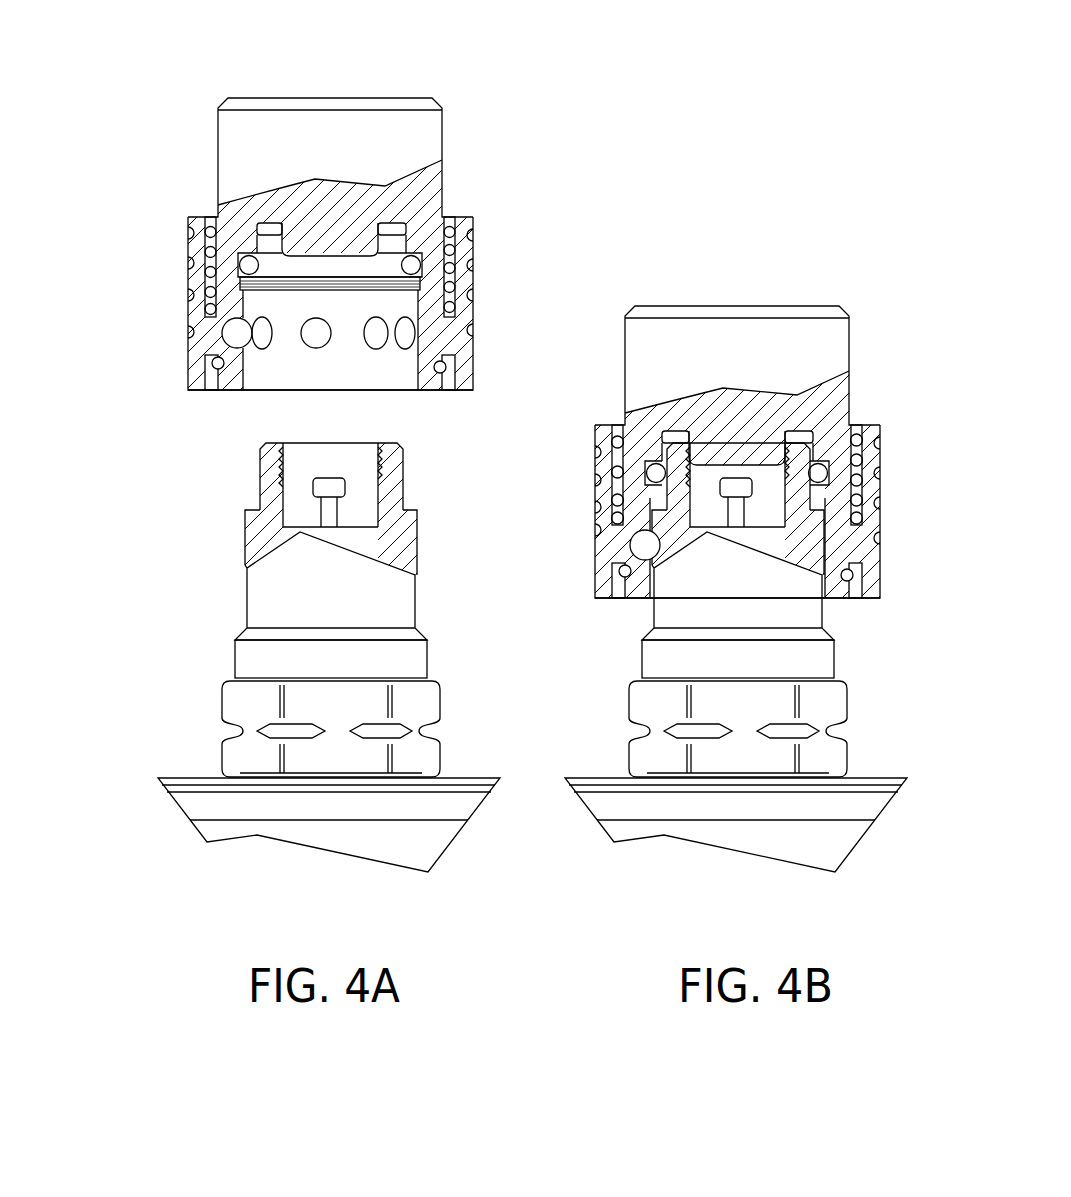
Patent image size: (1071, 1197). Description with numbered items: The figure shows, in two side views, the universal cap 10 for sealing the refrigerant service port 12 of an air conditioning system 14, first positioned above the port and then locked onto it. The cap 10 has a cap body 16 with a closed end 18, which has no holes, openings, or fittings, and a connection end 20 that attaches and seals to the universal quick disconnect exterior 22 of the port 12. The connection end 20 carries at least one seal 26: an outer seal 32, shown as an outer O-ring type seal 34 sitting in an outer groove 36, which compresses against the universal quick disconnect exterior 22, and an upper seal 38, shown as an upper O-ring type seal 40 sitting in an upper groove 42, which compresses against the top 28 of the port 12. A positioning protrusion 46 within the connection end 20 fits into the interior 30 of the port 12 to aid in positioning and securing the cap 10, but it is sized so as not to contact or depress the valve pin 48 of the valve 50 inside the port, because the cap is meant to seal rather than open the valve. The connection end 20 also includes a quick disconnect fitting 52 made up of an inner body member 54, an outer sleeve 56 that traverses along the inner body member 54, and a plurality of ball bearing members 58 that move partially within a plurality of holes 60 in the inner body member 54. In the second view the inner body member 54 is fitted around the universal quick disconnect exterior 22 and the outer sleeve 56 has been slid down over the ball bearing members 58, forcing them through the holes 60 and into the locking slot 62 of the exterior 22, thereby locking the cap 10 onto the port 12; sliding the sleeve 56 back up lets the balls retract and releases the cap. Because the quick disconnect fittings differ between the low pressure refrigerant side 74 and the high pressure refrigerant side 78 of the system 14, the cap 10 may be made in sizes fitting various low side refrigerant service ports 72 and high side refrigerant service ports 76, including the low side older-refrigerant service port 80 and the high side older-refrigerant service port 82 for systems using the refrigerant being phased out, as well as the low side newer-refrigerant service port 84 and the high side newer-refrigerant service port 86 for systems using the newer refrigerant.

In FIG. 4A, the universal cap 10 is at (447, 63).
In FIG. 4B, the universal cap 10 is at (876, 268).
In FIG. 4A, the refrigerant service port 12 is at (256, 703).
In FIG. 4B, the refrigerant service port 12 is at (664, 703).
In FIG. 4A, the air conditioning system 14 is at (294, 846).
In FIG. 4B, the air conditioning system 14 is at (743, 831).
In FIG. 4A, the cap body 16 is at (143, 190).
In FIG. 4B, the cap body 16 is at (580, 413).
In FIG. 4A, the closed end 18 is at (305, 65).
In FIG. 4B, the closed end 18 is at (713, 280).
In FIG. 4A, the connection end 20 is at (262, 397).
In FIG. 4B, the connection end 20 is at (630, 615).
In FIG. 4A, the universal quick disconnect exterior 22 is at (185, 540).
In FIG. 4B, the universal quick disconnect exterior 22 is at (840, 592).
In FIG. 4A, the seal 26 is at (155, 318).
In FIG. 4B, the seal 26 is at (582, 515).
In FIG. 4A, the top 28 is at (398, 446).
In FIG. 4B, the top 28 is at (856, 446).
In FIG. 4A, the interior 30 is at (302, 447).
In FIG. 4B, the interior 30 is at (708, 522).
In FIG. 4A, the outer seal 32 is at (210, 220).
In FIG. 4B, the outer seal 32 is at (624, 445).
In FIG. 4A, the outer O-ring type seal 34 is at (432, 262).
In FIG. 4B, the outer O-ring type seal 34 is at (657, 480).
In FIG. 4A, the outer groove 36 is at (250, 265).
In FIG. 4B, the outer groove 36 is at (826, 475).
In FIG. 4A, the upper seal 38 is at (252, 188).
In FIG. 4B, the upper seal 38 is at (682, 410).
In FIG. 4A, the upper O-ring type seal 40 is at (244, 230).
In FIG. 4B, the upper O-ring type seal 40 is at (646, 452).
In FIG. 4A, the upper groove 42 is at (284, 222).
In FIG. 4B, the upper groove 42 is at (665, 440).
In FIG. 4A, the positioning protrusion 46 is at (334, 228).
In FIG. 4B, the positioning protrusion 46 is at (735, 440).
In FIG. 4A, the valve pin 48 is at (320, 488).
In FIG. 4B, the valve pin 48 is at (748, 488).
In FIG. 4A, the valve 50 is at (300, 522).
In FIG. 4B, the valve 50 is at (776, 517).
In FIG. 4A, the quick disconnect fitting 52 is at (170, 343).
In FIG. 4B, the quick disconnect fitting 52 is at (908, 437).
In FIG. 4A, the inner body member 54 is at (228, 375).
In FIG. 4B, the inner body member 54 is at (606, 600).
In FIG. 4A, the outer sleeve 56 is at (455, 340).
In FIG. 4B, the outer sleeve 56 is at (866, 520).
In FIG. 4A, the ball bearing members 58 is at (243, 337).
In FIG. 4B, the ball bearing members 58 is at (652, 550).
In FIG. 4A, the holes 60 is at (408, 322).
In FIG. 4A, the locking slot 62 is at (242, 542).
In FIG. 4B, the locking slot 62 is at (660, 530).
In FIG. 4A, the low side refrigerant service port 72 is at (256, 729).
In FIG. 4B, the low side refrigerant service port 72 is at (664, 729).
In FIG. 4A, the high side refrigerant service port 76 is at (256, 729).
In FIG. 4B, the high side refrigerant service port 76 is at (664, 729).
In FIG. 4A, the low side HFC-134a refrigerant service port 80 is at (256, 729).
In FIG. 4B, the low side HFC-134a refrigerant service port 80 is at (664, 729).
In FIG. 4A, the high side HFC-134a refrigerant service port 82 is at (256, 729).
In FIG. 4B, the high side HFC-134a refrigerant service port 82 is at (664, 729).
In FIG. 4A, the low side 1234yf refrigerant service port 84 is at (256, 729).
In FIG. 4B, the low side 1234yf refrigerant service port 84 is at (664, 729).
In FIG. 4A, the high side 1234yf refrigerant service port 86 is at (214, 736).
In FIG. 4B, the high side 1234yf refrigerant service port 86 is at (621, 736).
In FIG. 4A, the low pressure refrigerant side 74 is at (328, 849).
In FIG. 4B, the low pressure refrigerant side 74 is at (763, 834).
In FIG. 4A, the high pressure refrigerant side 78 is at (375, 850).
In FIG. 4B, the high pressure refrigerant side 78 is at (820, 855).